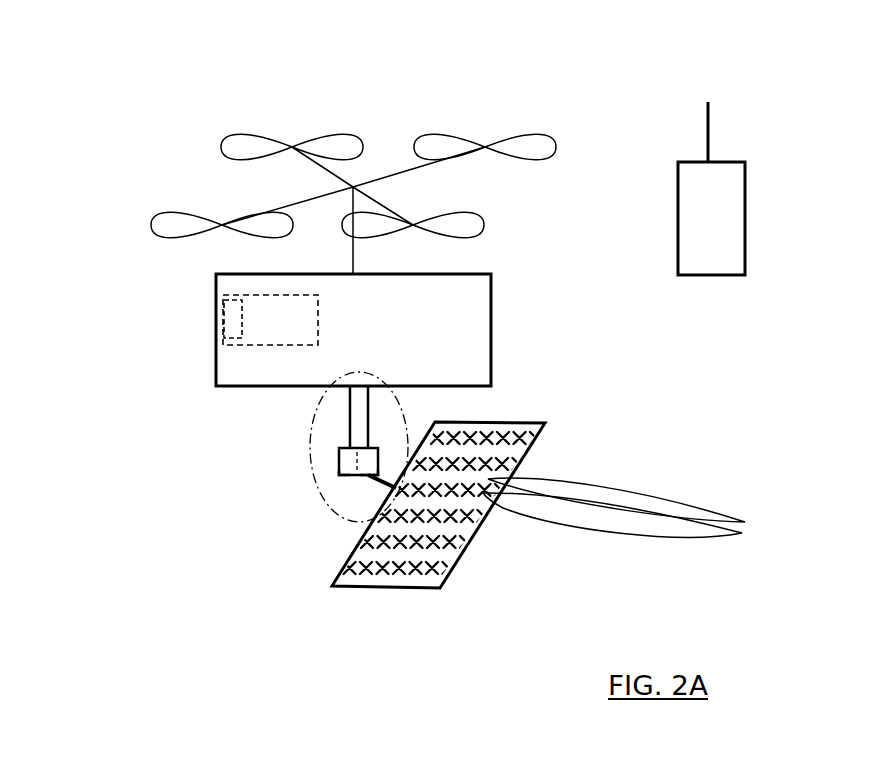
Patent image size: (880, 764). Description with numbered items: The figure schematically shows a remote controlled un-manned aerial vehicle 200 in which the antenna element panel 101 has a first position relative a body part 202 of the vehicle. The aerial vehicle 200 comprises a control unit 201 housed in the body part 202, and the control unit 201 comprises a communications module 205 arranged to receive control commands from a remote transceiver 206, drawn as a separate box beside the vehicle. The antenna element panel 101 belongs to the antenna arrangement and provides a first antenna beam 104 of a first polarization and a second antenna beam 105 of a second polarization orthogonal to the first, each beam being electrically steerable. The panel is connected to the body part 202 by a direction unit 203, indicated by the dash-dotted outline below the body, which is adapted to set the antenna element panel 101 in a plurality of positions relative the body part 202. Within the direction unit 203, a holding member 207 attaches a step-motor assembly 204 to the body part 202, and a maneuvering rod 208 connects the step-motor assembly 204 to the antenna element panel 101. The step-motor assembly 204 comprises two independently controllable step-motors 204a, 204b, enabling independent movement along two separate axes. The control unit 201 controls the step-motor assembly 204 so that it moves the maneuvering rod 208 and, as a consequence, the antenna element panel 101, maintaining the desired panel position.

The un-manned aerial vehicle 200 is at (295, 86).
The body part 202 is at (465, 317).
The communications module 205 is at (237, 305).
The control unit 201 is at (253, 347).
The holding member 207 is at (350, 412).
The step-motor assembly 204 is at (337, 453).
The direction unit 203 is at (310, 473).
The step-motor 204a is at (339, 475).
The step-motor 204b is at (367, 477).
The maneuvering rod 208 is at (390, 486).
The antenna element panel 101 is at (520, 423).
The first antenna beam 104 is at (583, 478).
The second antenna beam 105 is at (537, 517).
The remote transceiver 206 is at (737, 245).